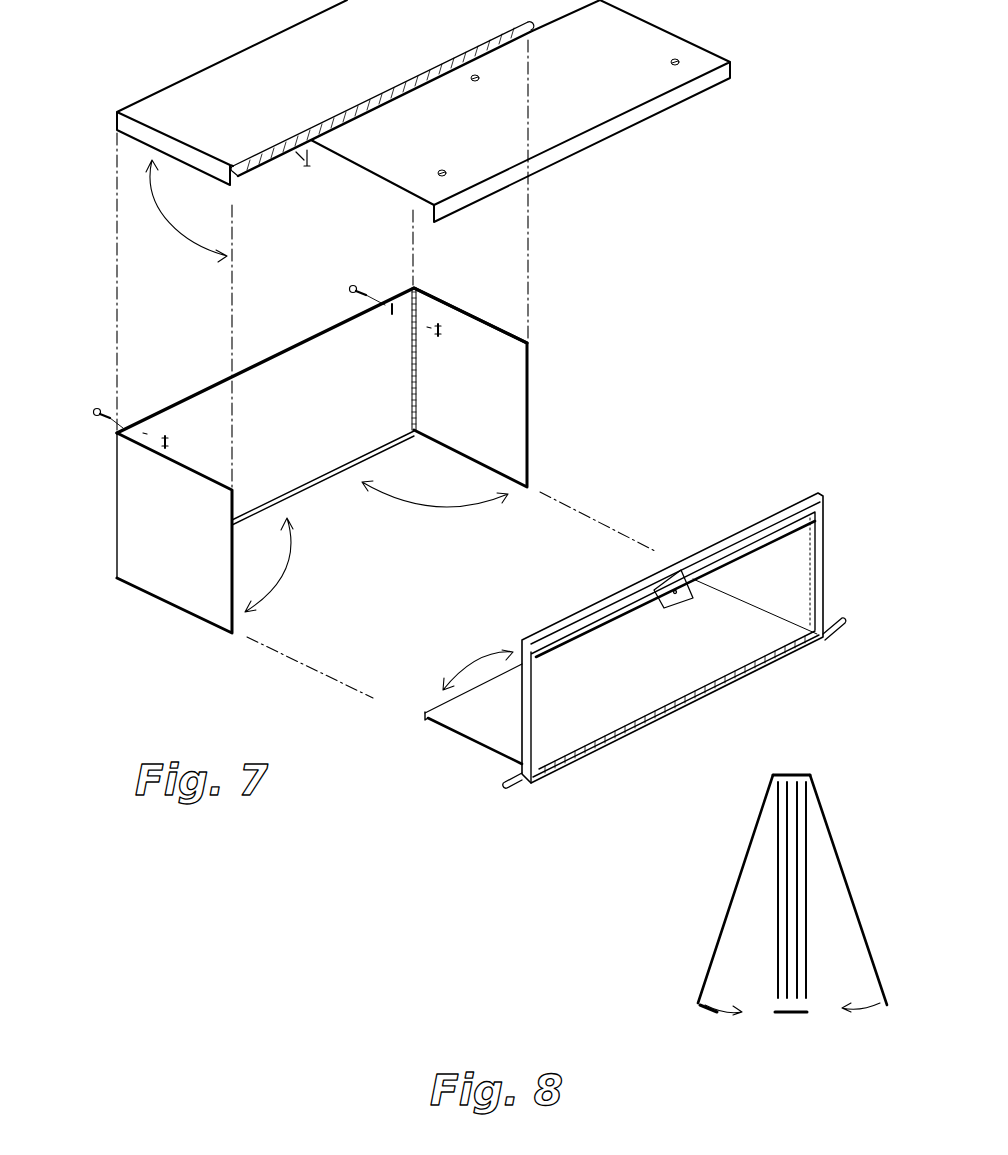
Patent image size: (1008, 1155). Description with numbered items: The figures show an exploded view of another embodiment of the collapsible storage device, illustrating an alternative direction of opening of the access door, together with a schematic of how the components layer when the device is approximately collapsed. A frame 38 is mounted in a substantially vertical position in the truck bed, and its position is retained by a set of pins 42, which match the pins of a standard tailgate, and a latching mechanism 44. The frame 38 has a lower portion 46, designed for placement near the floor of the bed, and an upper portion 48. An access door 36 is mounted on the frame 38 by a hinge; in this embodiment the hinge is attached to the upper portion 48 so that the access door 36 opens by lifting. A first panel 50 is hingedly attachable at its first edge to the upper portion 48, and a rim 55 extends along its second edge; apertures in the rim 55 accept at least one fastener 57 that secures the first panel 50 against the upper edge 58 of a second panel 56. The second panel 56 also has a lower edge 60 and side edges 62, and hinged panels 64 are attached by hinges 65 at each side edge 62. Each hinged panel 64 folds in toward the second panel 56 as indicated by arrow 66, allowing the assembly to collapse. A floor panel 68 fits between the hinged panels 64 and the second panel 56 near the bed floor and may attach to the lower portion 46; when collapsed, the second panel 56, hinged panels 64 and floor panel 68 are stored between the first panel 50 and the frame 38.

In FIG. 7, the access door 36 is at (506, 119).
In FIG. 8, the access door 36 is at (830, 823).
In FIG. 7, the frame 38 is at (580, 613).
In FIG. 8, the frame 38 is at (787, 770).
In FIG. 7, the pins 42 is at (510, 790).
In FIG. 7, the latching mechanism 44 is at (672, 592).
In FIG. 7, the lower portion 46 is at (722, 688).
In FIG. 7, the upper portion 48 is at (730, 532).
In FIG. 7, the first panel 50 is at (282, 89).
In FIG. 8, the first panel 50 is at (707, 957).
In FIG. 7, the rim 55 is at (117, 122).
In FIG. 7, the second panel 56 is at (299, 429).
In FIG. 8, the second panel 56 is at (775, 1003).
In FIG. 7, the fastener 57 is at (92, 406).
In FIG. 7, the upper edge 58 is at (202, 386).
In FIG. 7, the lower edge 60 is at (297, 489).
In FIG. 7, the side edges 62 is at (117, 547).
In FIG. 7, the hinged panels 64 is at (157, 519).
In FIG. 8, the hinged panels 64 is at (795, 1003).
In FIG. 7, the hinges 65 is at (418, 412).
In FIG. 7, the arrow 66 is at (284, 582).
In FIG. 7, the floor panel 68 is at (644, 691).
In FIG. 8, the floor panel 68 is at (808, 1005).